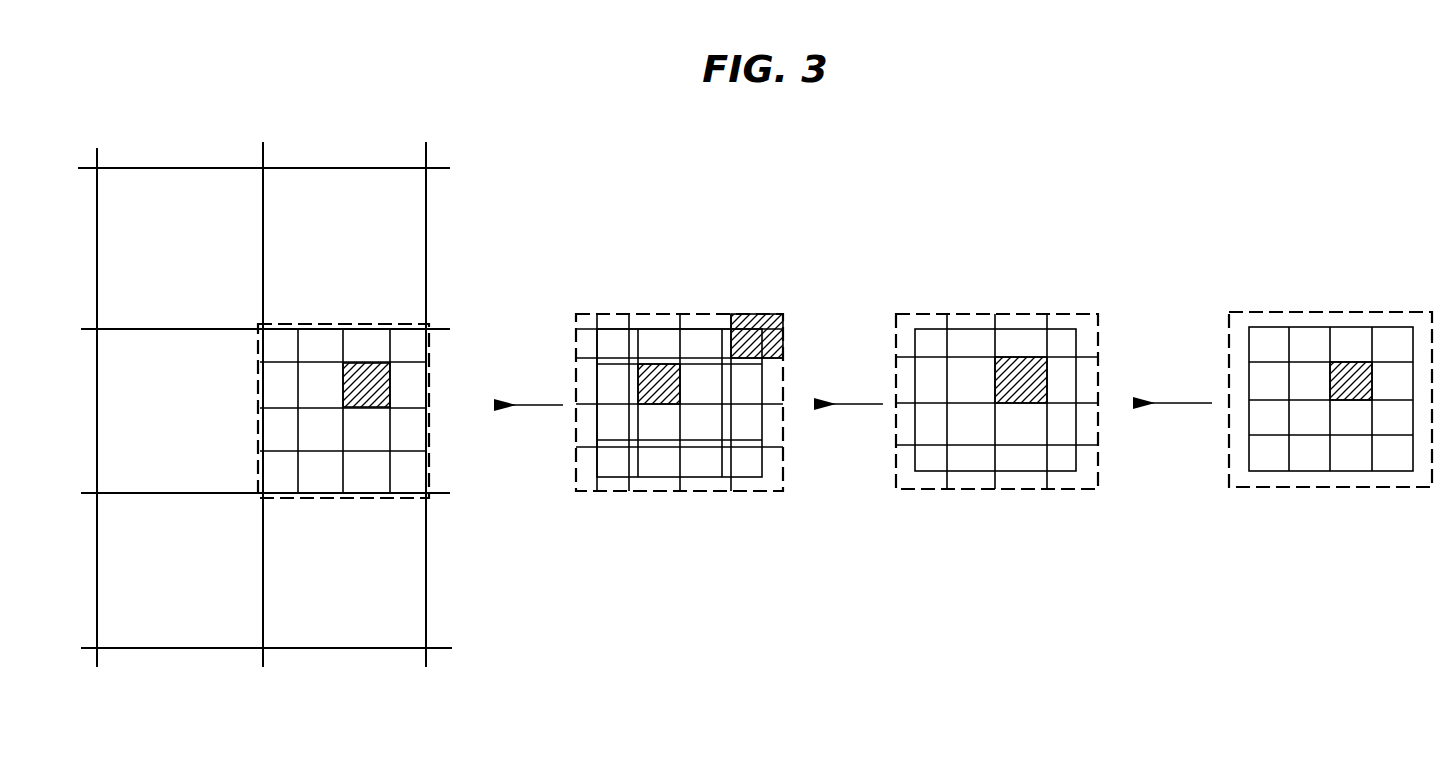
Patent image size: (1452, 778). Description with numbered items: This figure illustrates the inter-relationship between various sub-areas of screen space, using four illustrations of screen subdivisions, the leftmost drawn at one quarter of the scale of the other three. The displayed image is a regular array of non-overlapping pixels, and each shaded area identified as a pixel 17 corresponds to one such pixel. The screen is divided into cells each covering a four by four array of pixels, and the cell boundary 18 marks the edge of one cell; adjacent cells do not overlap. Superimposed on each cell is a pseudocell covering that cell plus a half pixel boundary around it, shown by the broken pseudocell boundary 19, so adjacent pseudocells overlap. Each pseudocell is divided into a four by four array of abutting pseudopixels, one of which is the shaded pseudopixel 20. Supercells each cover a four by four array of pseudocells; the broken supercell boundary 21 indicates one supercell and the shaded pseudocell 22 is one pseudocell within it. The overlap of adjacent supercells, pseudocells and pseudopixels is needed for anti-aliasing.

The pixel 17 is at (640, 385).
The cell boundary 18 is at (934, 328).
The pseudocell boundary 19 is at (648, 312).
The pseudopixel 20 is at (760, 315).
The supercell boundary 21 is at (394, 328).
The pseudocell 22 is at (364, 371).